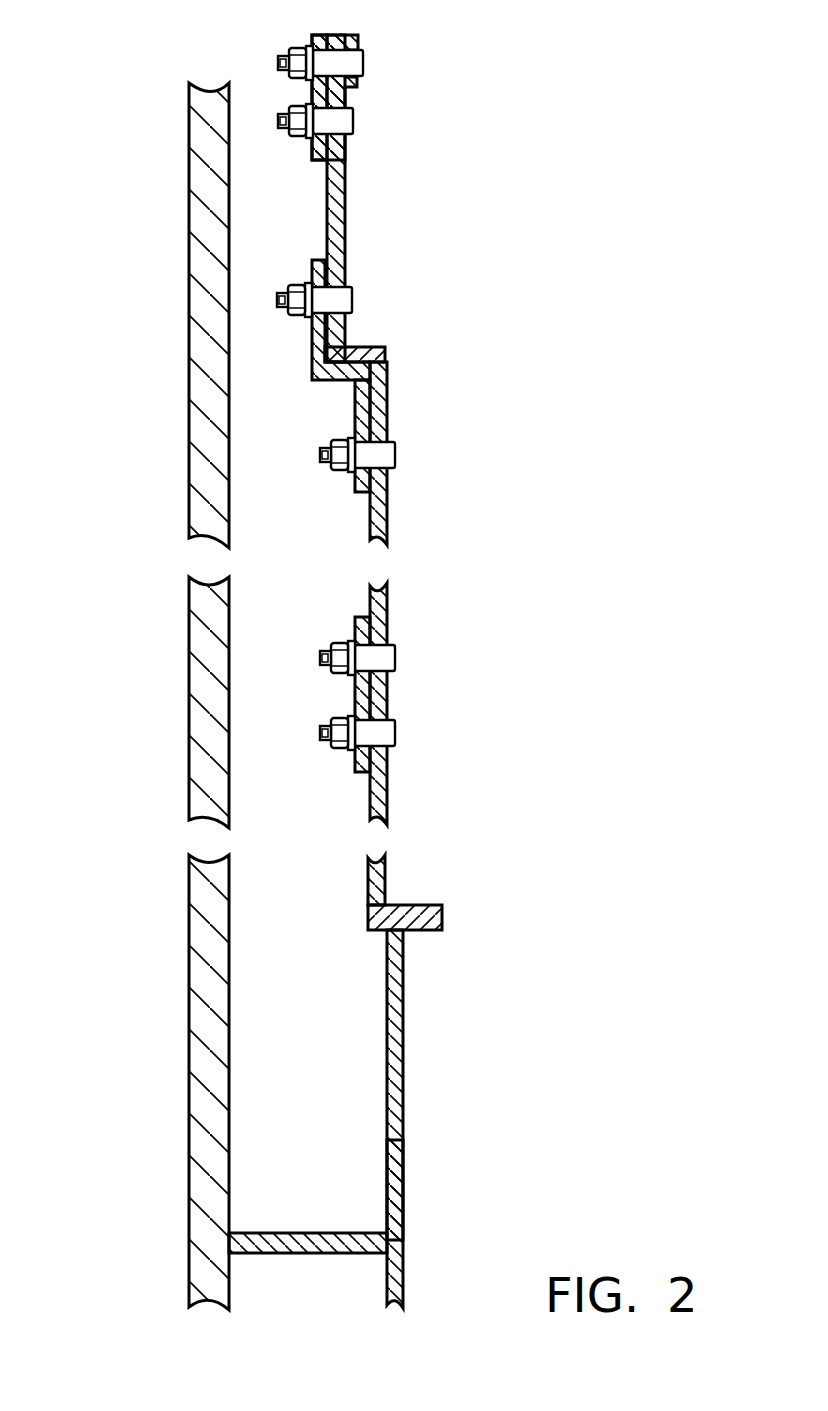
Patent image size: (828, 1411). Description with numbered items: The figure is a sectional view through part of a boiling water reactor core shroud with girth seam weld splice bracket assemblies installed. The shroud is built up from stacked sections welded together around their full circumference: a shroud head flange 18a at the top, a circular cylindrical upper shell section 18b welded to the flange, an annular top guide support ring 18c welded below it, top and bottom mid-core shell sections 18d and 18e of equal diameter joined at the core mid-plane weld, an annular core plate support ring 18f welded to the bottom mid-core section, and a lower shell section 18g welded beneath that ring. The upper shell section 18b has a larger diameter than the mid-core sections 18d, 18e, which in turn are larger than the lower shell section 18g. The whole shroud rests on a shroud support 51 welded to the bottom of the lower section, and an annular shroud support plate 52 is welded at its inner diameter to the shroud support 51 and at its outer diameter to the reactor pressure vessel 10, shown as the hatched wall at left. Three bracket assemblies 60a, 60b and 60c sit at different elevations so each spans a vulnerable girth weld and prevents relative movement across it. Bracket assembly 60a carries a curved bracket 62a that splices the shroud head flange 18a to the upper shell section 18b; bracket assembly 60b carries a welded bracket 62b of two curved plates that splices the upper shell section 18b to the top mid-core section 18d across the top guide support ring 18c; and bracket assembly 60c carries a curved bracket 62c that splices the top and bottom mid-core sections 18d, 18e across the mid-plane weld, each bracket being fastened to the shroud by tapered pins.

The RPV 10 is at (203, 984).
The shroud head flange 18a is at (356, 37).
The upper shell section 18b is at (338, 208).
The top guide support ring 18c is at (370, 350).
The top mid-core shell section 18d is at (378, 523).
The bottom mid-core shell section 18e is at (380, 792).
The core plate support ring 18f is at (422, 912).
The lower shell section 18g is at (397, 983).
The shroud support 51 is at (398, 1192).
The shroud support plate 52 is at (270, 1240).
The bracket assembly 60a is at (235, 45).
The bracket assembly 60b is at (303, 420).
The bracket assembly 60c is at (257, 722).
The bracket 62a is at (318, 88).
The bracket 62b is at (304, 345).
The bracket 62c is at (355, 698).